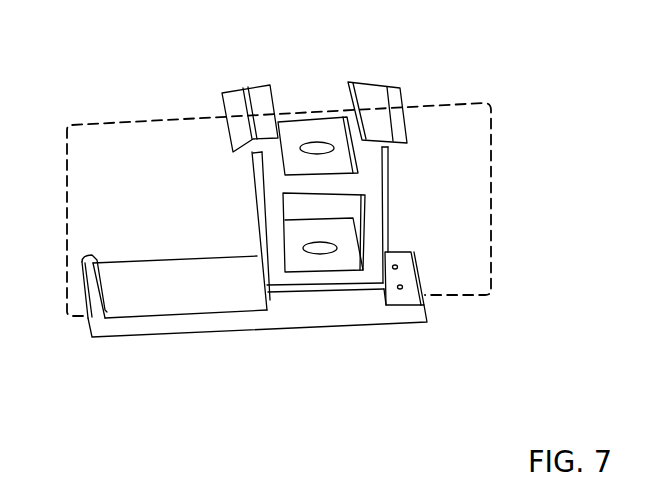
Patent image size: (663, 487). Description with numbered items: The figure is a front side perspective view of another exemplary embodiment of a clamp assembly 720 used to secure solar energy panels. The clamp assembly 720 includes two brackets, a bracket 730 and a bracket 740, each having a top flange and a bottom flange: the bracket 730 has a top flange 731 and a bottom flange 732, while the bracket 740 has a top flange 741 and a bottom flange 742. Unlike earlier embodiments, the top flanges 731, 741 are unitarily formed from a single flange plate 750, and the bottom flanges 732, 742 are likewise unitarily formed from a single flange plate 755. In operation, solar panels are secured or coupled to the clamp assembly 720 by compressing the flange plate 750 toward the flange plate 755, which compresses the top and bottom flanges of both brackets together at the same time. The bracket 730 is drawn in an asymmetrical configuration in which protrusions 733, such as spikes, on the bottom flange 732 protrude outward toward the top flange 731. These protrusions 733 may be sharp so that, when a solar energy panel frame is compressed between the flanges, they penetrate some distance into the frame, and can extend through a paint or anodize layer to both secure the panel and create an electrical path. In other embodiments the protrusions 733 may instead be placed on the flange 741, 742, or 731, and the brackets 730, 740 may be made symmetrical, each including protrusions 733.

The clamp assembly 720 is at (468, 36).
The bracket 730 is at (330, 222).
The top flange 731 is at (390, 147).
The bottom flange 732 is at (402, 300).
The protrusions 733 is at (403, 283).
The bracket 740 is at (66, 223).
The top flange 741 is at (253, 145).
The bottom flange 742 is at (163, 298).
The flange plate 750 is at (293, 138).
The flange plate 755 is at (358, 312).